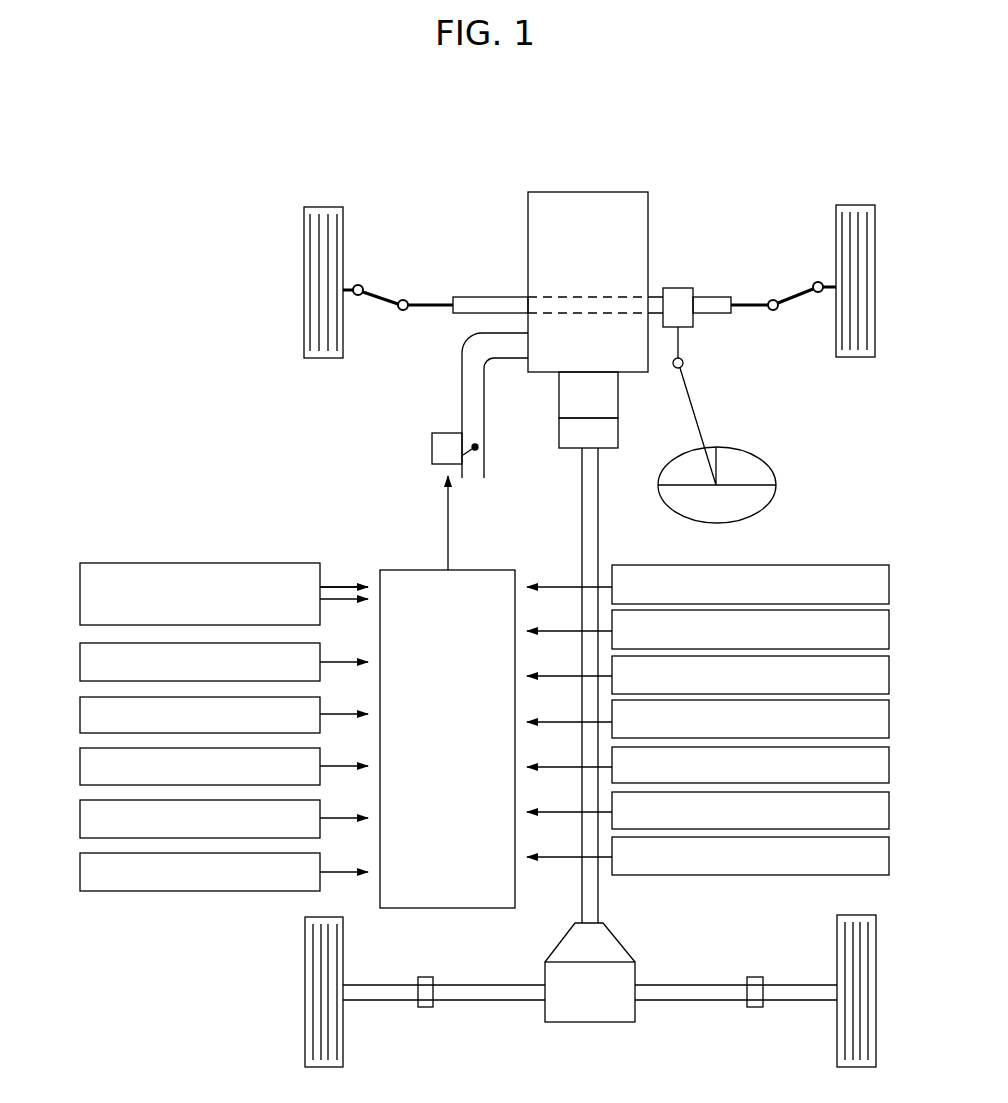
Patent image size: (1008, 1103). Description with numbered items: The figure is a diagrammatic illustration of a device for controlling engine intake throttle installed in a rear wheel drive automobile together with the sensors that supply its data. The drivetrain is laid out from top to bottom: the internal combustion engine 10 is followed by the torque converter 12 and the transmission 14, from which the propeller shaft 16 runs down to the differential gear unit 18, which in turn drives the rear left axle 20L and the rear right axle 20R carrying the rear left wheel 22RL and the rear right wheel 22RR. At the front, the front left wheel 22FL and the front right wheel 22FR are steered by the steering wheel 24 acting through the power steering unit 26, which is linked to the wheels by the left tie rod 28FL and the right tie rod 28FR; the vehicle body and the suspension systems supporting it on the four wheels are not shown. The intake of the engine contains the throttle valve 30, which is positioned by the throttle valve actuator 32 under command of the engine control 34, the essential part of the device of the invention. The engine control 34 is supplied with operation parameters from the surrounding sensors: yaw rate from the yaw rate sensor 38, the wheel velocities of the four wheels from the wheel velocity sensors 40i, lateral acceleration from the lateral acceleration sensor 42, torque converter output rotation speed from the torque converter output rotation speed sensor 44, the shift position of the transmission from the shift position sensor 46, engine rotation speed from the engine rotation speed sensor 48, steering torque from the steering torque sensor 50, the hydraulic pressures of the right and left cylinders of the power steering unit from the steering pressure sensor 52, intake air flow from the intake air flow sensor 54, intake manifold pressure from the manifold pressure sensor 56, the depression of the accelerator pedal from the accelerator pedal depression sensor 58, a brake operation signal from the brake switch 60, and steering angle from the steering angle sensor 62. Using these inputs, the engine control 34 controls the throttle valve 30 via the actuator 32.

The internal combustion engine 10 is at (575, 266).
The torque converter 12 is at (575, 403).
The transmission 14 is at (559, 432).
The propeller shaft 16 is at (582, 515).
The differential gear unit 18 is at (597, 1023).
The rear left axle 20L is at (470, 1001).
The rear right axle 20R is at (709, 1001).
The front left wheel 22FL is at (320, 207).
The front right wheel 22FR is at (852, 205).
The rear left wheel 22RL is at (343, 1048).
The rear right wheel 22RR is at (837, 1046).
The steering wheel 24 is at (757, 456).
The power steering unit 26 is at (680, 288).
The left tie rod 28FL is at (373, 300).
The right tie rod 28FR is at (793, 302).
The throttle valve 30 is at (478, 447).
The throttle valve actuator 32 is at (432, 449).
The engine control 34 is at (436, 776).
The yaw rate sensor 38 is at (889, 598).
The wheel velocity sensors 40i is at (889, 643).
The lateral acceleration sensor 42 is at (889, 688).
The torque converter output rotation speed sensor 44 is at (889, 733).
The shift position sensor 46 is at (889, 778).
The engine rotation speed sensor 48 is at (889, 823).
The steering torque sensor 50 is at (889, 868).
The steering pressure sensor 52 is at (80, 608).
The intake air flow sensor 54 is at (80, 676).
The manifold pressure sensor 56 is at (80, 729).
The accelerator pedal depression sensor 58 is at (80, 781).
The brake switch 60 is at (80, 834).
The steering angle sensor 62 is at (80, 886).